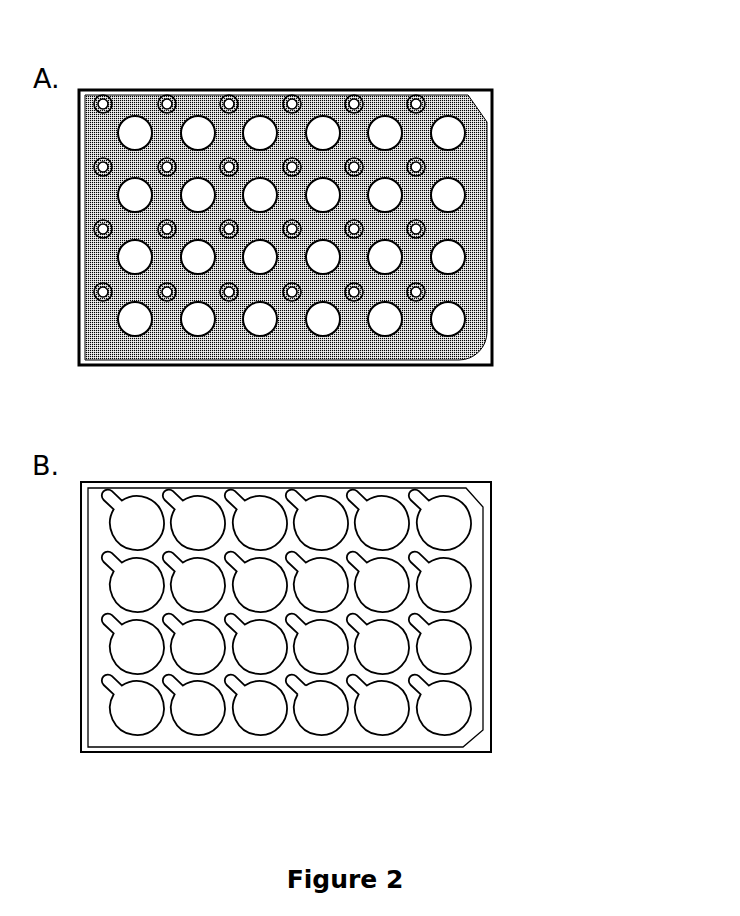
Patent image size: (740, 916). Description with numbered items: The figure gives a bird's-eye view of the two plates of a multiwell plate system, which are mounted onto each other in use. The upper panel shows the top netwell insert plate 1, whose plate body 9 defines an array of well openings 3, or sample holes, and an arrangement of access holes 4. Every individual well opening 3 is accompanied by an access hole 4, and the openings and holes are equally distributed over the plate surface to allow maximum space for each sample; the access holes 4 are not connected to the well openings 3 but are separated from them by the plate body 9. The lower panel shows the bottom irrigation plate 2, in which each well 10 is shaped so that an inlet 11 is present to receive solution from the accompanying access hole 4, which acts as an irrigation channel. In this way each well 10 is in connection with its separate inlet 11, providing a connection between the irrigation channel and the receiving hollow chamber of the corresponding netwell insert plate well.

The top netwell insert plate 1 is at (368, 196).
The bottom irrigation plate 2 is at (367, 652).
The well opening 3 is at (397, 121).
The access hole 4 is at (363, 108).
The plate body 9 is at (424, 98).
The well 10 is at (340, 725).
The inlet 11 is at (300, 688).